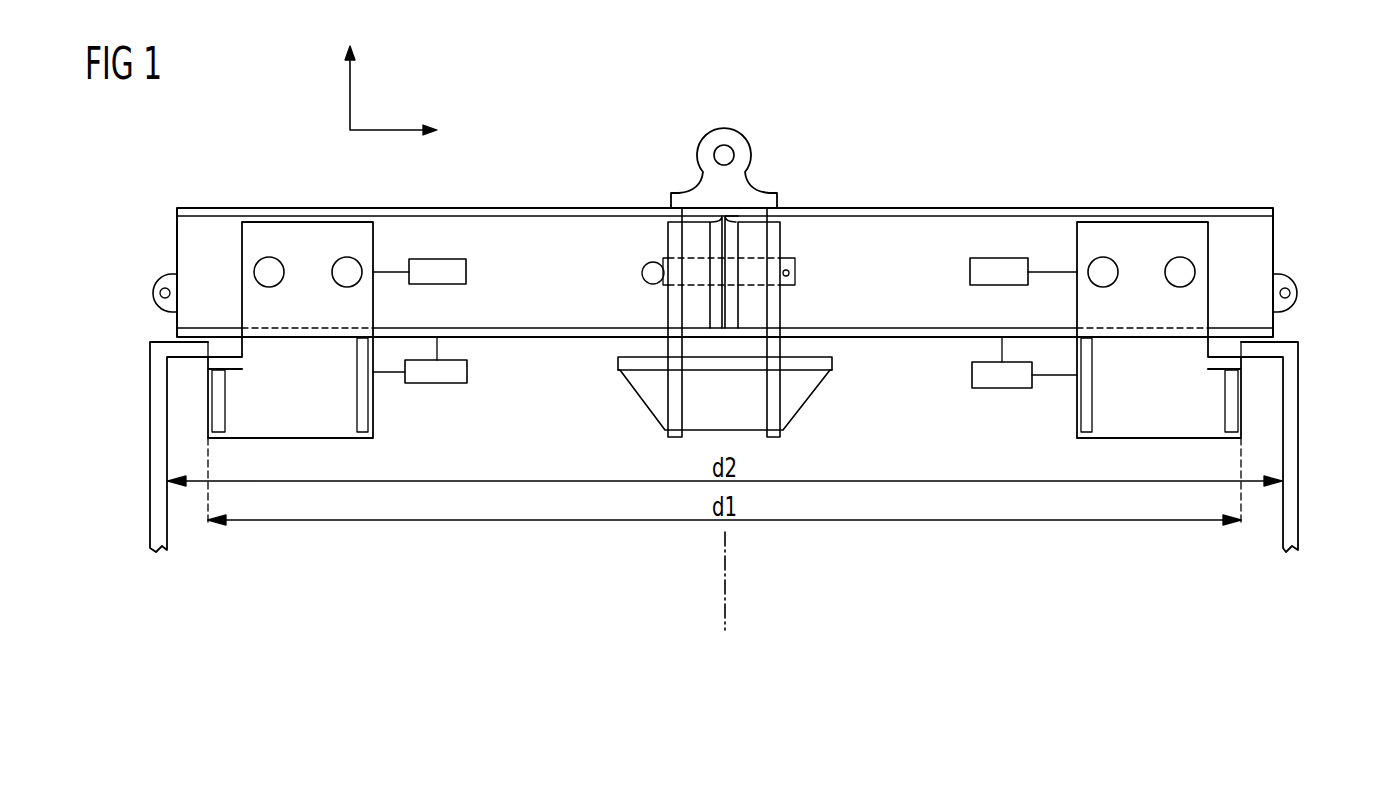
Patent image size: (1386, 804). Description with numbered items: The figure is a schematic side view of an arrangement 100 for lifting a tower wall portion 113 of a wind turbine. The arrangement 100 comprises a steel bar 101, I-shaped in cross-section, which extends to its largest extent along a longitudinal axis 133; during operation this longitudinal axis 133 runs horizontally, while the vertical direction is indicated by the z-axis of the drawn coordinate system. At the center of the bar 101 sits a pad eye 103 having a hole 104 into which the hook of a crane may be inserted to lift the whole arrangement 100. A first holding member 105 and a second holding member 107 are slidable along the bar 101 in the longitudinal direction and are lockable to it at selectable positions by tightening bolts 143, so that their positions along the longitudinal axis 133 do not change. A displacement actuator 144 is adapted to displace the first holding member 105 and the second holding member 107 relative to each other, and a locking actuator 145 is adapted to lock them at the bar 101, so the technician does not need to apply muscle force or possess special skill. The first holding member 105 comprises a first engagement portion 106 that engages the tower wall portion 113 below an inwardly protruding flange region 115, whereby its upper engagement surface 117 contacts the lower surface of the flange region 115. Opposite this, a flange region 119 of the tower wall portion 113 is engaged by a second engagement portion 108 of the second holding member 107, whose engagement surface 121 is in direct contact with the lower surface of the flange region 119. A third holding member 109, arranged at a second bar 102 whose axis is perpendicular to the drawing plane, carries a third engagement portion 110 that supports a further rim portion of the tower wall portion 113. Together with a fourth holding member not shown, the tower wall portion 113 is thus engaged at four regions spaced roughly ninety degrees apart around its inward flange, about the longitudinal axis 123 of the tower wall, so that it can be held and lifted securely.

The arrangement for lifting a tower wall portion 100 is at (1027, 114).
The bar 101 is at (540, 246).
The second bar 102 is at (775, 243).
The pad eye 103 is at (724, 127).
The hole 104 is at (722, 154).
The first holding member 105 is at (326, 319).
The first engagement portion 106 is at (390, 417).
The second holding member 107 is at (1164, 319).
The second engagement portion 108 is at (1062, 403).
The third holding member 109 is at (842, 395).
The third engagement portion 110 is at (618, 362).
The tower wall portion 113 is at (152, 426).
The flange region 115 is at (202, 349).
The upper engagement surface 117 is at (224, 362).
The flange region 119 is at (1253, 349).
The engagement surface 121 is at (1226, 361).
The longitudinal axis of the tower wall 123 is at (727, 581).
The longitudinal axis 133 is at (390, 129).
The bolts 143 is at (344, 274).
The displacement actuator 144 is at (467, 372).
The locking actuator 145 is at (466, 272).